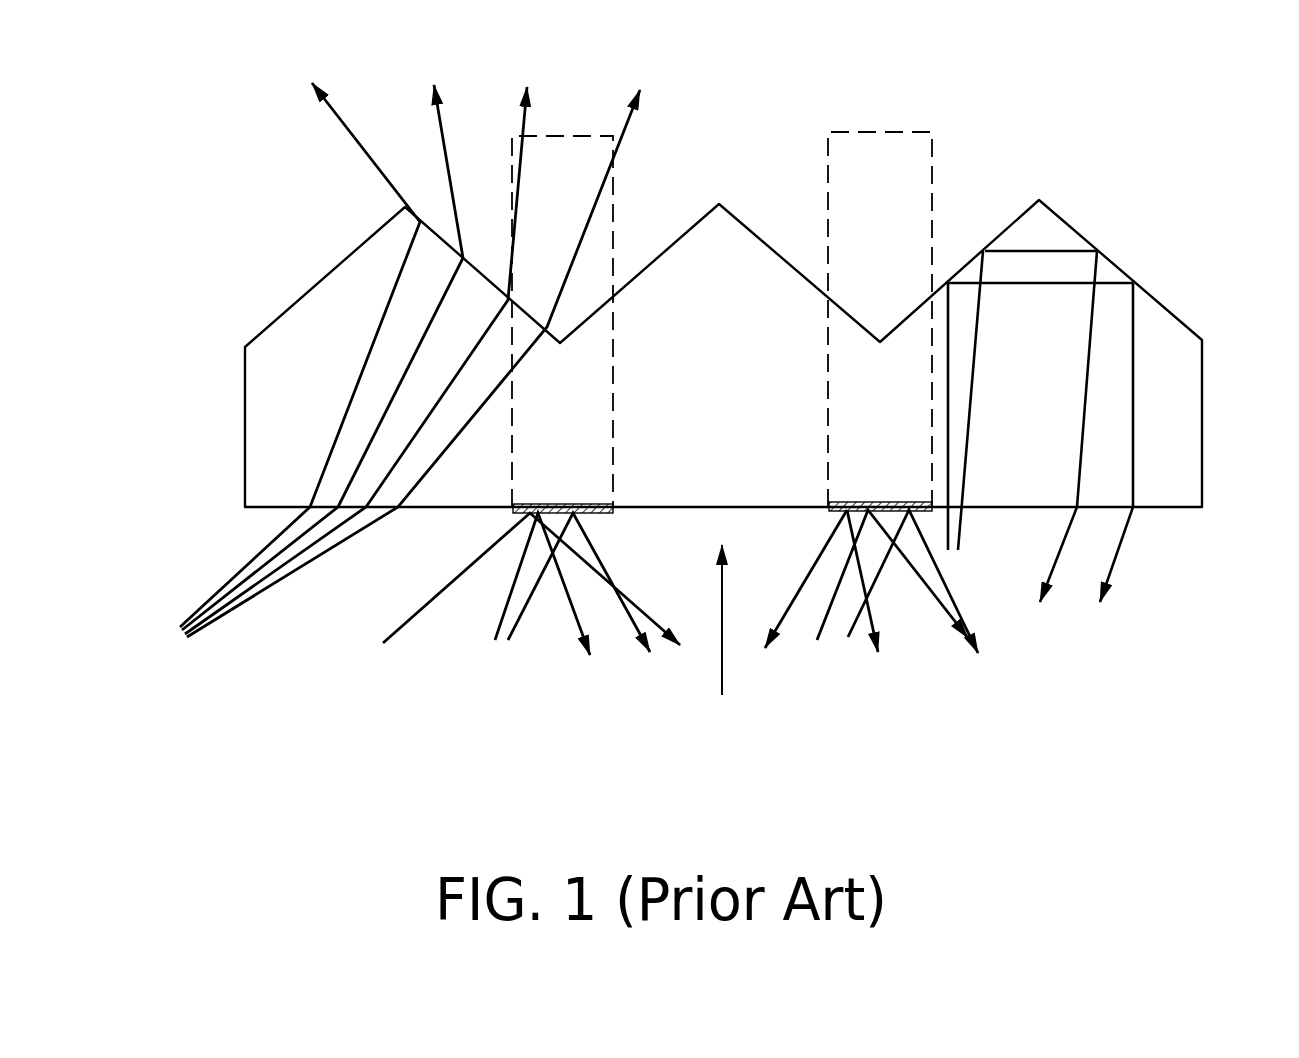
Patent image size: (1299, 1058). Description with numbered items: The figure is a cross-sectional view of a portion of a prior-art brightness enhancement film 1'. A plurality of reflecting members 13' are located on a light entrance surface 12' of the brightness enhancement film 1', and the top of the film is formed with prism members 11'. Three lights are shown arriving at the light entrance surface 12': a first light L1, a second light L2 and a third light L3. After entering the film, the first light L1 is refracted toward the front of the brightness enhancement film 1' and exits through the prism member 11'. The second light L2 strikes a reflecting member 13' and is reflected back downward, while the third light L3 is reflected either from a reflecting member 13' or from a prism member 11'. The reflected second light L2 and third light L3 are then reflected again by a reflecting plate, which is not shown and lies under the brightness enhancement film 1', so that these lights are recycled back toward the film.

The brightness enhancement film 1' is at (712, 412).
The prism member 11' is at (723, 374).
The light entrance surface 12' is at (723, 643).
The reflecting member 13' is at (722, 322).
The first light L1 is at (384, 381).
The second light L2 is at (531, 600).
The third light L3 is at (871, 596).